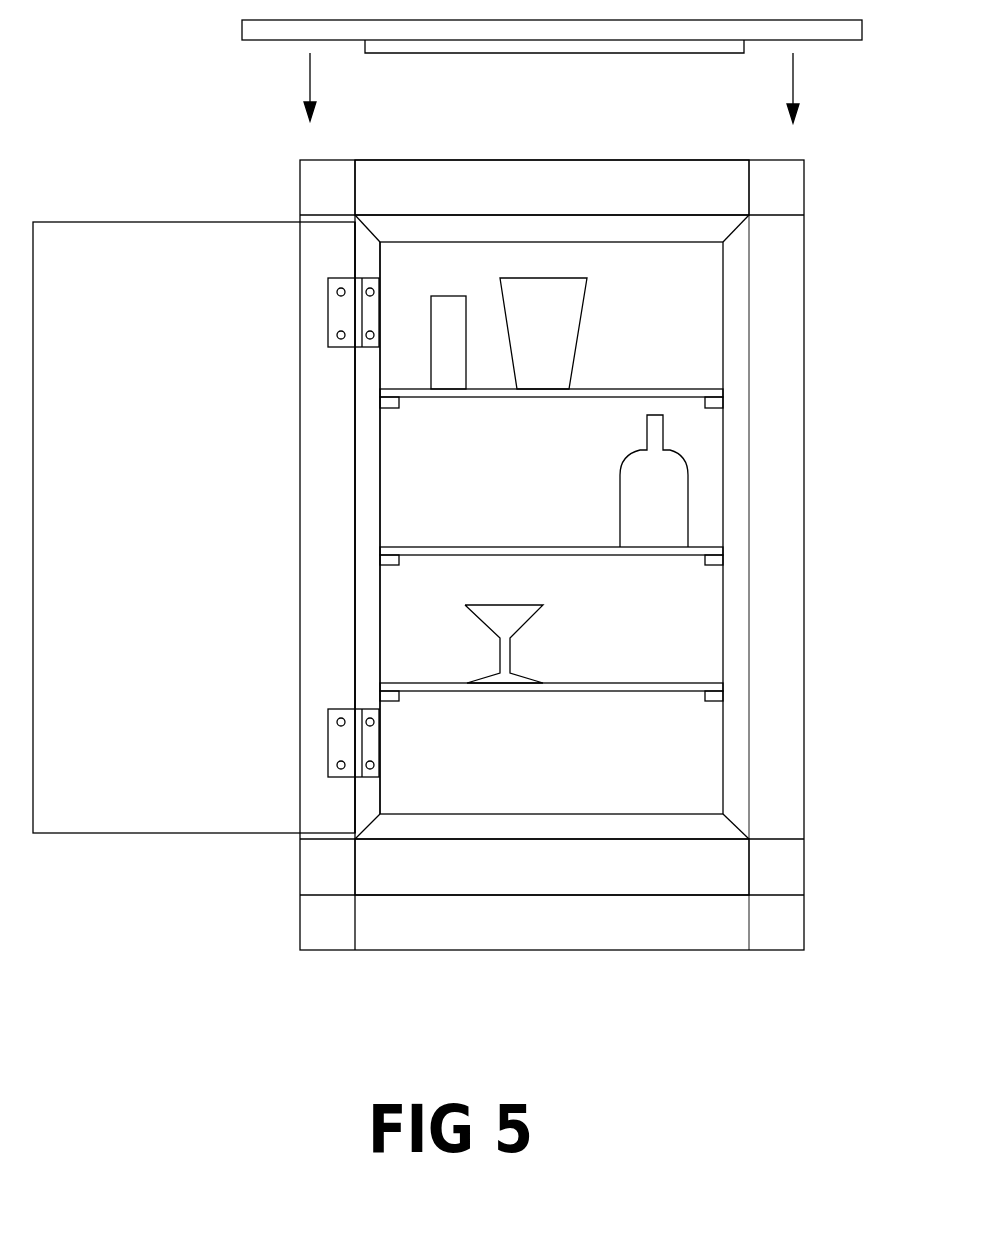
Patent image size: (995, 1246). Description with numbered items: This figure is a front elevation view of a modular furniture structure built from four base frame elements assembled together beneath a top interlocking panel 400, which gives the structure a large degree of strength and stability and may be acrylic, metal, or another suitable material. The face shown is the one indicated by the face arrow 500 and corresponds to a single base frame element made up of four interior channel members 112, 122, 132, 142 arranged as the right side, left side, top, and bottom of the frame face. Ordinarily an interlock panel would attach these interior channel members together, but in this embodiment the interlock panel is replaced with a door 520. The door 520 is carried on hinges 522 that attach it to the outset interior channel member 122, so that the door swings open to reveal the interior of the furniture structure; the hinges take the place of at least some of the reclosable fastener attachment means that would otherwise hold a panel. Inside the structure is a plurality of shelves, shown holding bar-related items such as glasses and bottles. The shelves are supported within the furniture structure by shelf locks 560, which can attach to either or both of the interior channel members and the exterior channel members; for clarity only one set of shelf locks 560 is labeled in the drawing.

The top interlocking panel 400 is at (415, 53).
The interior channel member 132 is at (538, 230).
The interior channel member 112 is at (735, 515).
The outset interior channel member 122 is at (378, 502).
The interior channel member 142 is at (523, 827).
The shelf locks 560 is at (723, 695).
The door 520 is at (213, 538).
The hinges 522 is at (328, 312).
The face arrow 500 is at (214, 1016).